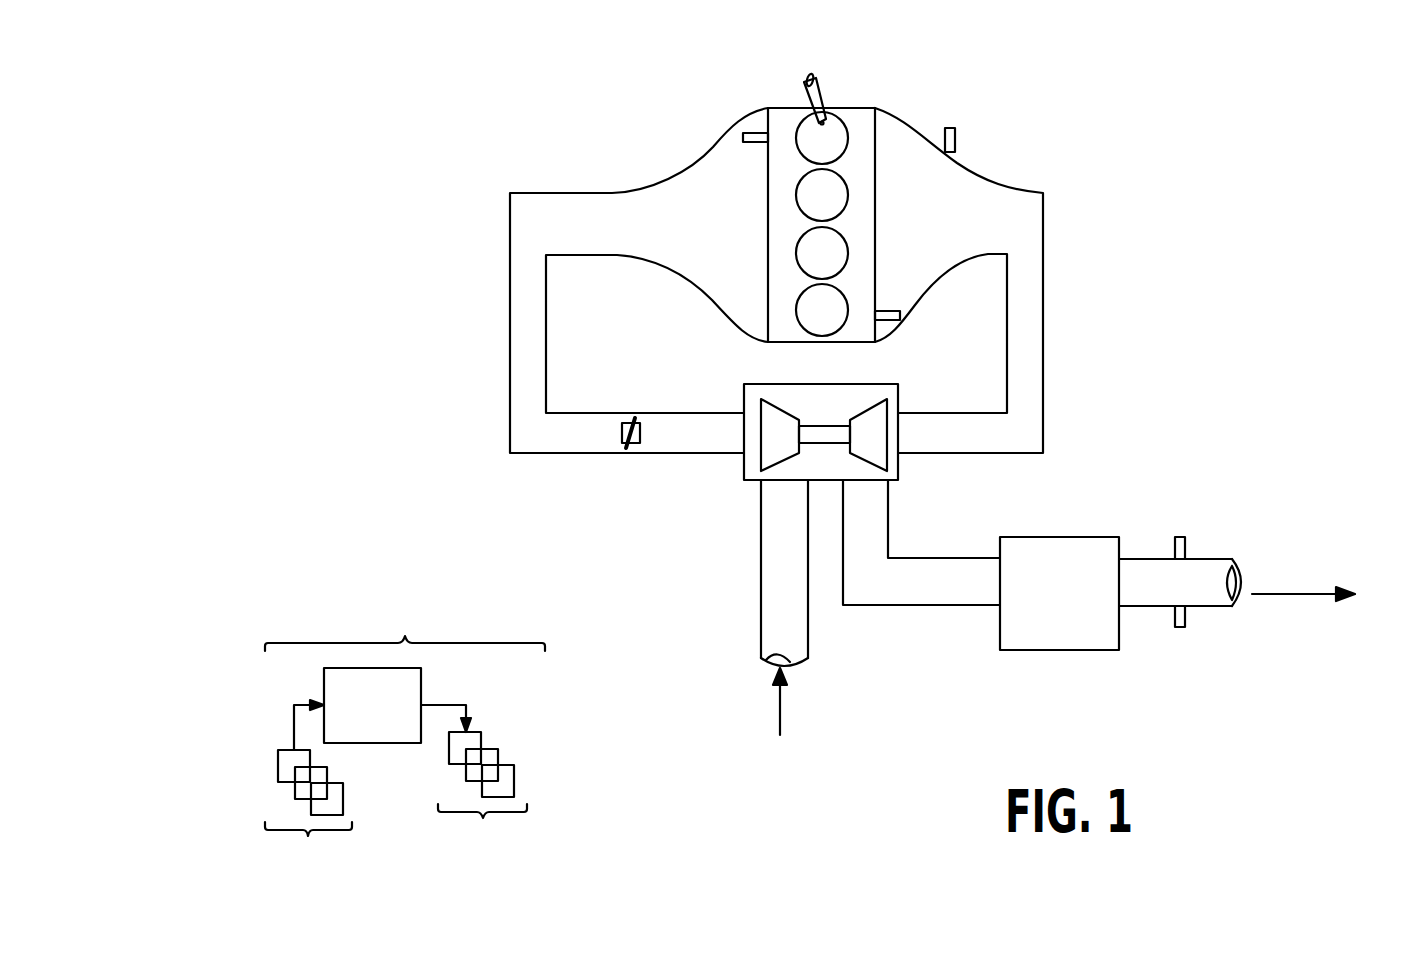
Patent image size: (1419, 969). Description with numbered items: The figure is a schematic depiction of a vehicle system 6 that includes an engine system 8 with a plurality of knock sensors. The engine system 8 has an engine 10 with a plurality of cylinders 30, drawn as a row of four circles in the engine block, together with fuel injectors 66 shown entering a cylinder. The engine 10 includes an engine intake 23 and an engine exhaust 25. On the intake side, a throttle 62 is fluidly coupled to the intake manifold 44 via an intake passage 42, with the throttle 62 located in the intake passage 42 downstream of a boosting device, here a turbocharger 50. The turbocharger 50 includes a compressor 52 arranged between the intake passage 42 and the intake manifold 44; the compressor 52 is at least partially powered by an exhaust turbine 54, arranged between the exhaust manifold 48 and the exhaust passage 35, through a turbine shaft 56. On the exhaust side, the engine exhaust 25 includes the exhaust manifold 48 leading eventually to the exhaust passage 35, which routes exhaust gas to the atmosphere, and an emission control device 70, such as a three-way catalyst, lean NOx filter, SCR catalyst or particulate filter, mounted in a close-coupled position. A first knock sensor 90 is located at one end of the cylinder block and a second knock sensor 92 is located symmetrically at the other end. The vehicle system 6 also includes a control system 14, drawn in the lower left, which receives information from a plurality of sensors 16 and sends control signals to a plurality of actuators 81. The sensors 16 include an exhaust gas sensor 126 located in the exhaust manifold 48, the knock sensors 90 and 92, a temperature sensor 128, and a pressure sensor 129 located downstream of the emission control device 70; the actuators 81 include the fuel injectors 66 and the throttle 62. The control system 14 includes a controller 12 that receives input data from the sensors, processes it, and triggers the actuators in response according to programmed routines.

The vehicle system 6 is at (230, 126).
The engine system 8 is at (1062, 108).
The engine 10 is at (875, 204).
The controller 12 is at (372, 705).
The control system 14 is at (405, 735).
The sensors 16 is at (308, 792).
The engine intake 23 is at (682, 560).
The engine exhaust 25 is at (1075, 340).
The cylinders 30 is at (846, 130).
The exhaust passage 35 is at (1200, 558).
The intake passage 42 is at (761, 605).
The intake manifold 44 is at (700, 230).
The exhaust manifold 48 is at (992, 234).
The turbocharger 50 is at (818, 384).
The compressor 52 is at (760, 420).
The exhaust turbine 54 is at (888, 420).
The turbine shaft 56 is at (805, 426).
The throttle 62 is at (641, 435).
The fuel injectors 66 is at (815, 74).
The emission control device 70 is at (1043, 537).
The actuators 81 is at (474, 785).
The first knock sensor 90 is at (900, 316).
The second knock sensor 92 is at (750, 130).
The exhaust gas sensor 126 is at (970, 136).
The temperature sensor 128 is at (1185, 616).
The pressure sensor 129 is at (1180, 537).